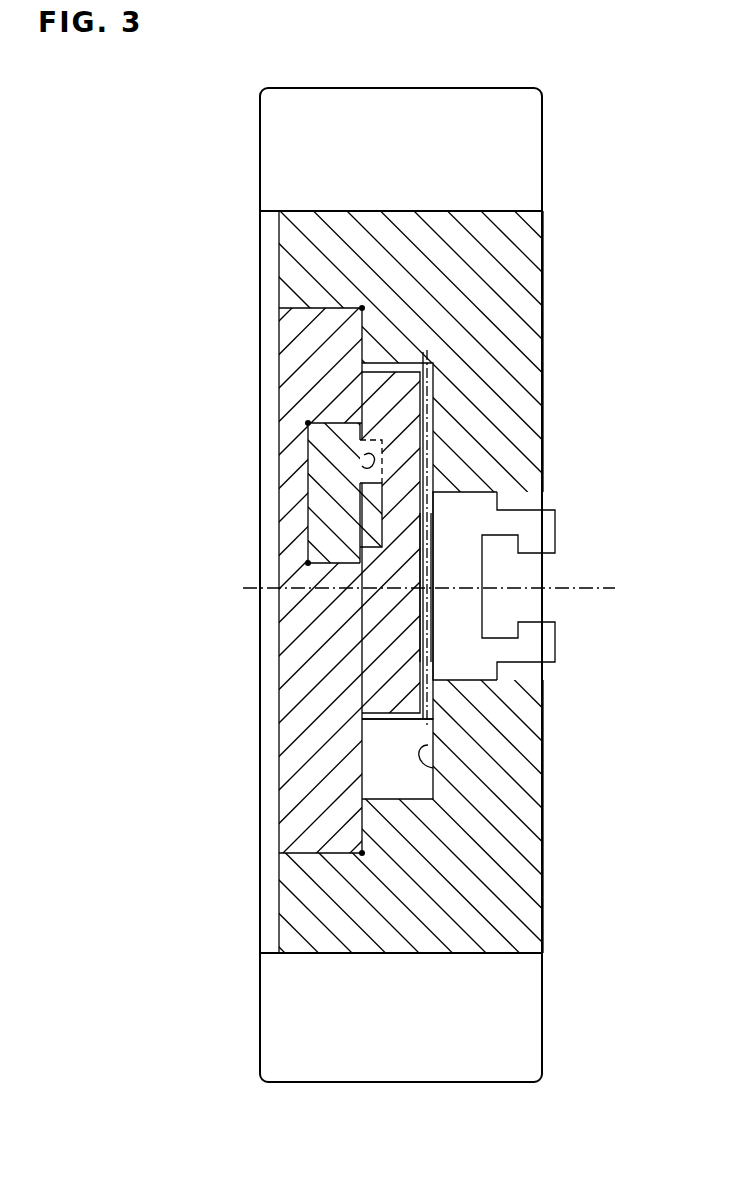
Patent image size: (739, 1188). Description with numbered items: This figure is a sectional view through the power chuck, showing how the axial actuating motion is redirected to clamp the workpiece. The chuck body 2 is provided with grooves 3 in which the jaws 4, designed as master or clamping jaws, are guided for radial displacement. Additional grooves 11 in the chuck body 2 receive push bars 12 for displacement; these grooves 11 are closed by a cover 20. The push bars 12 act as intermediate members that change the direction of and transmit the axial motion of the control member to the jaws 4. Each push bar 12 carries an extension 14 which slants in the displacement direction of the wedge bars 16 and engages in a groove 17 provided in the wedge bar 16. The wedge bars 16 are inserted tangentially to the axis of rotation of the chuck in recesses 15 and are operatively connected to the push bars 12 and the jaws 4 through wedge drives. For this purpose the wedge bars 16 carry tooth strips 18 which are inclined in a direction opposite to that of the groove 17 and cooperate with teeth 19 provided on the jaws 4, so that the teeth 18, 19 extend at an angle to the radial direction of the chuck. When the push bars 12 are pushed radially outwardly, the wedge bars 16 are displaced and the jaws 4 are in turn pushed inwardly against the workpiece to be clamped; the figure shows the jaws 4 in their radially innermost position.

The chuck body 2 is at (525, 272).
The grooves 3 is at (460, 492).
The jaws 4 is at (540, 538).
The additional grooves 11 is at (317, 493).
The push bars 12 is at (330, 525).
The extension 14 is at (362, 472).
The recesses 15 is at (433, 768).
The wedge bars 16 is at (410, 398).
The groove 17 is at (388, 444).
The tooth strips 18 is at (428, 690).
The teeth 19 is at (427, 606).
The cover 20 is at (303, 637).